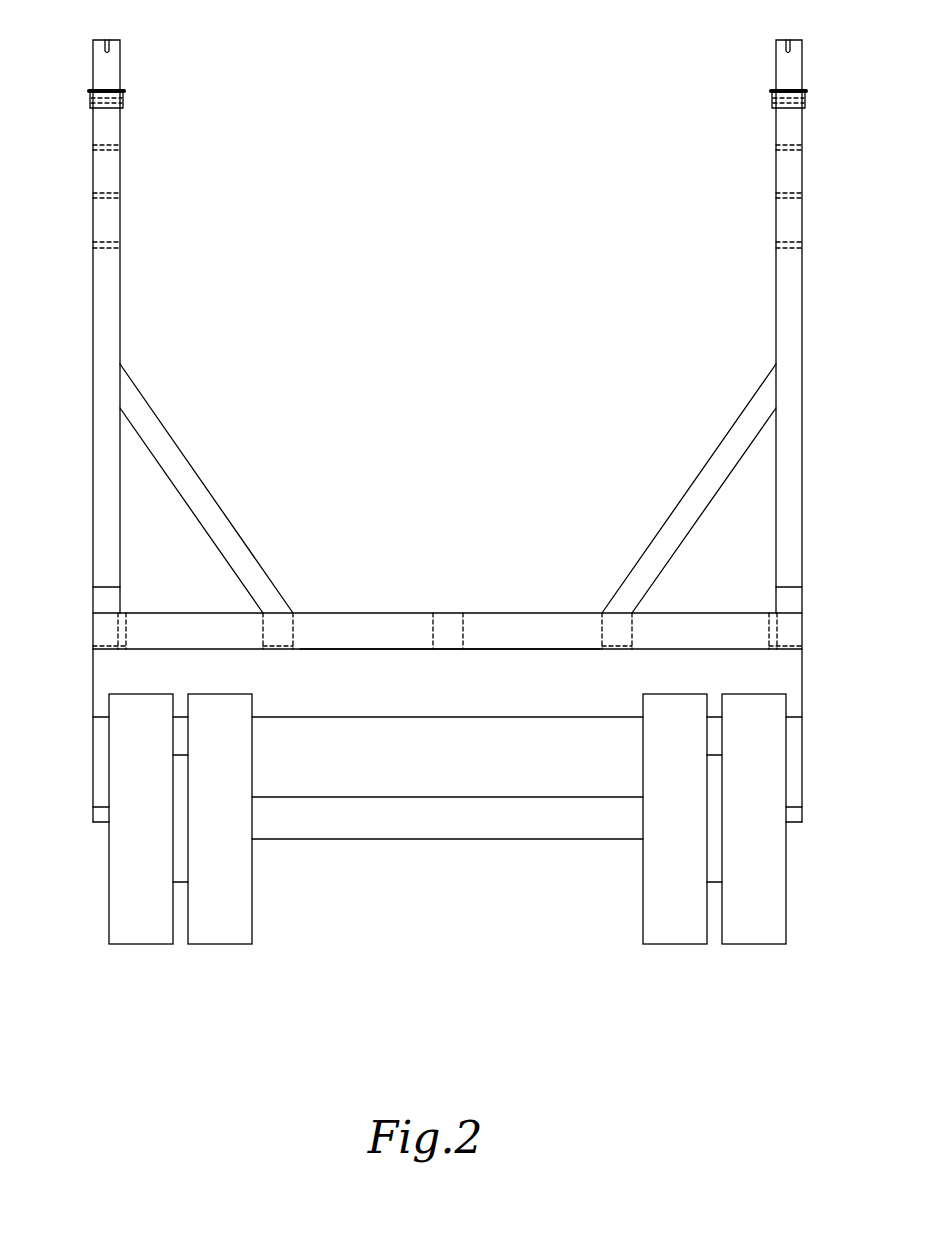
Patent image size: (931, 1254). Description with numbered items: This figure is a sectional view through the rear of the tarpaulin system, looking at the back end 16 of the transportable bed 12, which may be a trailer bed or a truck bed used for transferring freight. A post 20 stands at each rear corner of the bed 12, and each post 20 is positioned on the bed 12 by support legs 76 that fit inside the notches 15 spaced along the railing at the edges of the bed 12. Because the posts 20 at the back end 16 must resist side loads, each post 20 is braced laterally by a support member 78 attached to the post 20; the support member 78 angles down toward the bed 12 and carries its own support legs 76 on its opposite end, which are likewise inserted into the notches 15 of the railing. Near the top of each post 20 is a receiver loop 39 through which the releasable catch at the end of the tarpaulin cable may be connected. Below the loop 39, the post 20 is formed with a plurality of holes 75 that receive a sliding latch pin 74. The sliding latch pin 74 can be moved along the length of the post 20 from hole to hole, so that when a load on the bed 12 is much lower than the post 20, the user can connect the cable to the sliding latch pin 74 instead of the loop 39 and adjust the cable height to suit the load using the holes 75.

The transportable bed 12 is at (362, 651).
The notches 15 is at (120, 651).
The back end 16 is at (515, 637).
The post 20 is at (100, 318).
The receiver loop 39 is at (109, 46).
The sliding latch pin 74 is at (123, 92).
The holes 75 is at (120, 146).
The support legs 76 is at (112, 628).
The support members 78 is at (204, 478).